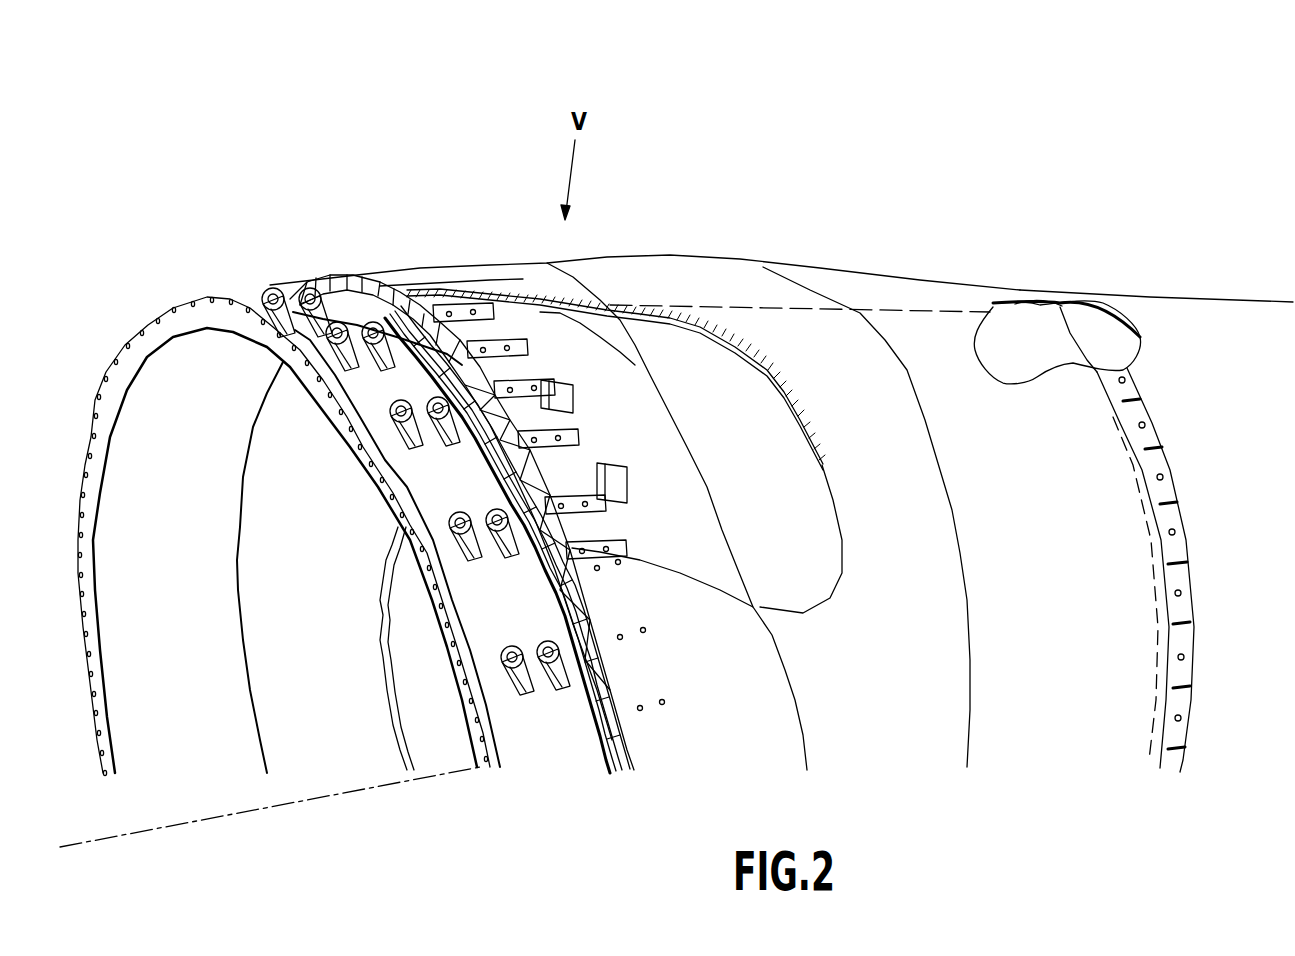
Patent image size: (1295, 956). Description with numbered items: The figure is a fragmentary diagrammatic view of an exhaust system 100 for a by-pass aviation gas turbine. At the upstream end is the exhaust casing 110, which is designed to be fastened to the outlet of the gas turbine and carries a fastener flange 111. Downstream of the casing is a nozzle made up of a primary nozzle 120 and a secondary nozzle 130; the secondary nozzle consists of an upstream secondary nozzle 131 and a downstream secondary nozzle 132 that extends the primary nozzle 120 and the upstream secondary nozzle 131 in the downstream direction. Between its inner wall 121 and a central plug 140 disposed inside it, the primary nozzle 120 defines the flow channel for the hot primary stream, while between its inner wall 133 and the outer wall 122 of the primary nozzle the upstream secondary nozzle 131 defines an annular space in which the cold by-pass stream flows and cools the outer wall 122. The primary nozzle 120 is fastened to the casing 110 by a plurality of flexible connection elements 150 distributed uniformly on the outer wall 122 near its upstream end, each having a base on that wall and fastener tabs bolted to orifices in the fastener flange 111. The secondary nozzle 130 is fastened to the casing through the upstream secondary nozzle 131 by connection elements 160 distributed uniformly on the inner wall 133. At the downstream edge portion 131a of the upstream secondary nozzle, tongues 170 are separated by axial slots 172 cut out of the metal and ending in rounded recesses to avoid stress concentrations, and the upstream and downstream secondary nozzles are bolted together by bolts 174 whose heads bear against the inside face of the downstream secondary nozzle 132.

The exhaust system 100 is at (687, 186).
The exhaust casing 110 is at (378, 388).
The fastener flange 111 is at (498, 460).
The primary nozzle 120 is at (662, 498).
The inner wall 121 is at (252, 514).
The outer wall 122 is at (797, 537).
The secondary nozzle 130 is at (1035, 270).
The upstream secondary nozzle 131 is at (763, 280).
The edge portion 131a is at (1170, 488).
The downstream secondary nozzle 132 is at (1205, 318).
The inner wall 133 is at (768, 372).
The plug 140 is at (380, 628).
The flexible connection element 150 is at (607, 467).
The connection element 160 is at (535, 383).
The tongue 170 is at (1143, 410).
The slot 172 is at (1173, 563).
The bolt 174 is at (1172, 532).